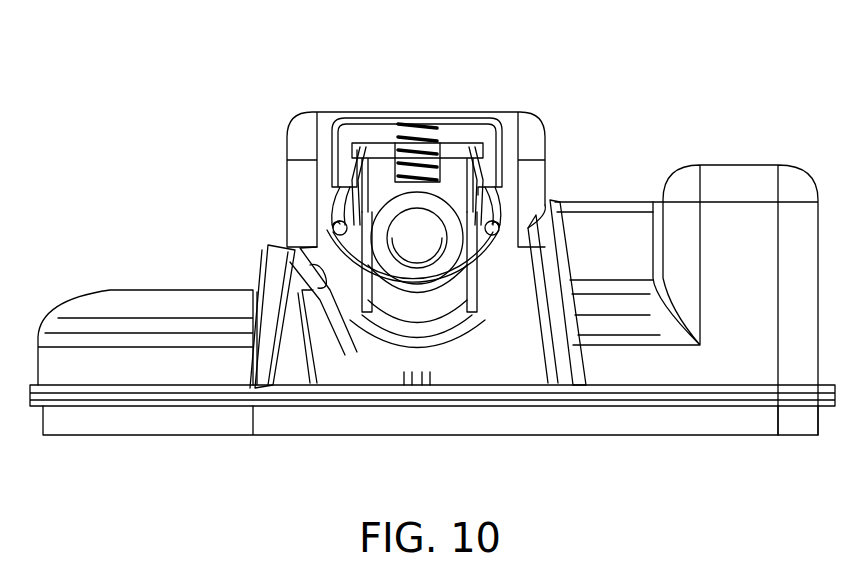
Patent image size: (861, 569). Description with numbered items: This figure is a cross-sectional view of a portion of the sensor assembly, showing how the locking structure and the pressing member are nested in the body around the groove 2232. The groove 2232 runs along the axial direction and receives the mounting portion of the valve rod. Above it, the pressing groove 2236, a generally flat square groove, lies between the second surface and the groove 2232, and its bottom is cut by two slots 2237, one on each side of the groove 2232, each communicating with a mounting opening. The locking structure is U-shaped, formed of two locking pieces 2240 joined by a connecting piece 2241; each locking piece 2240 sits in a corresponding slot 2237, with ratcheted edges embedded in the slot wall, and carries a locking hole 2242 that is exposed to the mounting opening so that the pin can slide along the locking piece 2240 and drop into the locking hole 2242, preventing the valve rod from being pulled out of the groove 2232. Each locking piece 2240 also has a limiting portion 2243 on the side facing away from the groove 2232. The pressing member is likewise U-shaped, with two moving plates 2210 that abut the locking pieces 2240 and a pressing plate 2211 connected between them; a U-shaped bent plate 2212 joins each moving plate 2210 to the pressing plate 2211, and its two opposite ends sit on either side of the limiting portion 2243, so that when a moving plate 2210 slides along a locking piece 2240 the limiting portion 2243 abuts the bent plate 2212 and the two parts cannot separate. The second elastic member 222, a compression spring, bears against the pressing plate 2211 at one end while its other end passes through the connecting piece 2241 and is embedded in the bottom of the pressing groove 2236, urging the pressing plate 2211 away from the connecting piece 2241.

The second elastic member 222 is at (425, 112).
The moving plate 2210 is at (520, 190).
The pressing plate 2211 is at (465, 112).
The bent plate 2212 is at (503, 150).
The pressing groove 2236 is at (325, 112).
The slot 2237 is at (330, 207).
The locking piece 2240 is at (293, 260).
The connecting piece 2241 is at (378, 140).
The locking hole 2242 is at (327, 245).
The limiting portion 2243 is at (355, 172).
The groove 2232 is at (430, 278).